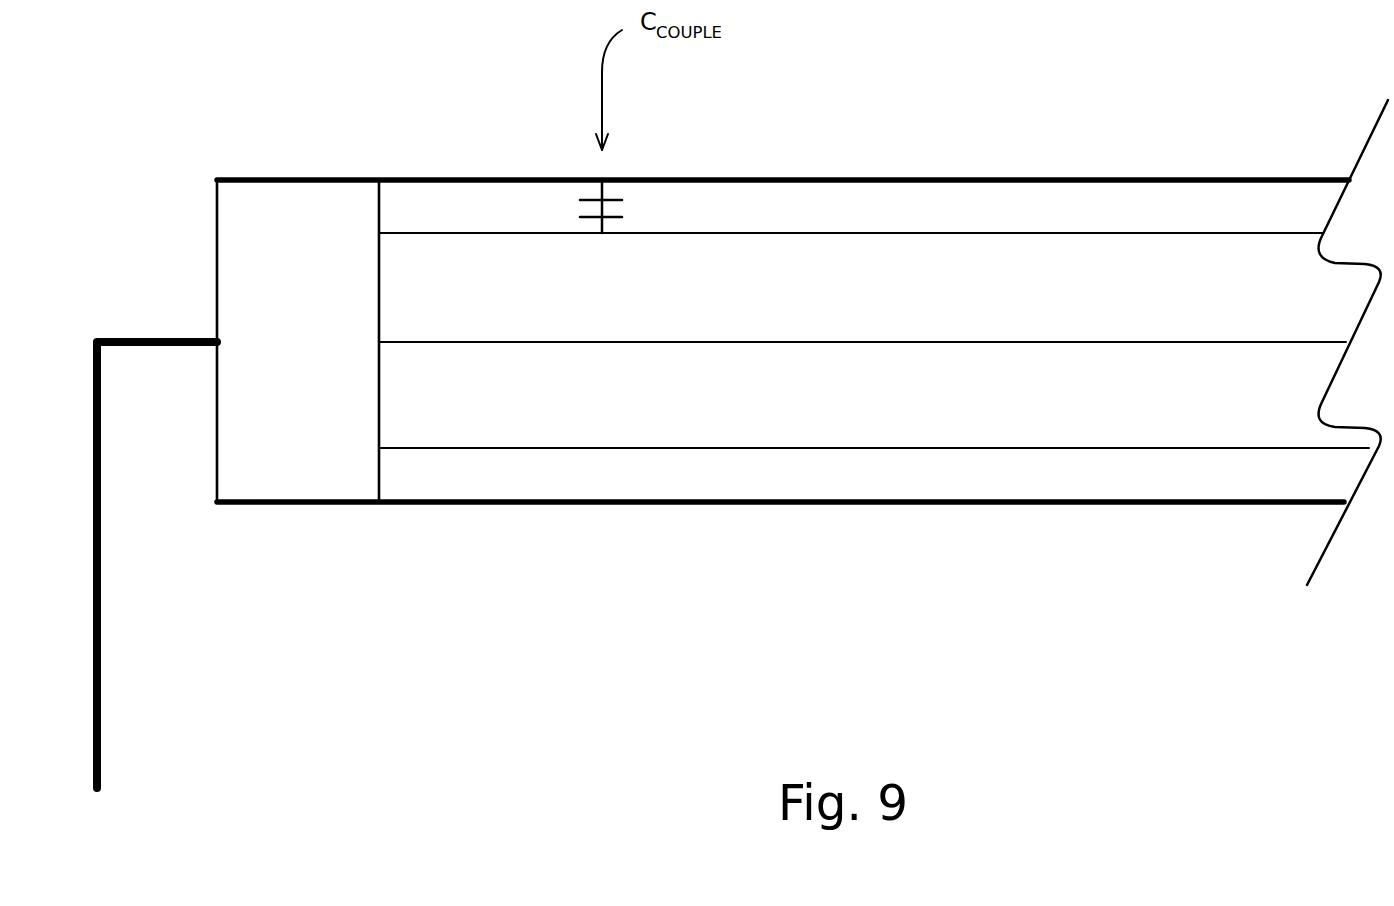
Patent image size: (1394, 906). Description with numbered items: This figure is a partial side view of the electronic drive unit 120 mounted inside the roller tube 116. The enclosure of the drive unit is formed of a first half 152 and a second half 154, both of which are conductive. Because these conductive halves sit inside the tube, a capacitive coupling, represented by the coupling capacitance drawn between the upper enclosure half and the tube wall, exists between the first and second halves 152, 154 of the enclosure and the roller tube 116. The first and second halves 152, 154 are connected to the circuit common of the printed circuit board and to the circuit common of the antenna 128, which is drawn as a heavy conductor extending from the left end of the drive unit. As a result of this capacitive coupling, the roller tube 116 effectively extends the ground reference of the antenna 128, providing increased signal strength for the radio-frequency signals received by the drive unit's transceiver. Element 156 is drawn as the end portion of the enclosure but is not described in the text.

The roller tube 116 is at (1185, 177).
The electronic drive unit 120 is at (582, 583).
The antenna 128 is at (102, 587).
The first half of the enclosure 152 is at (903, 300).
The second half of the enclosure 154 is at (823, 422).
The connecting bar 156 is at (258, 220).